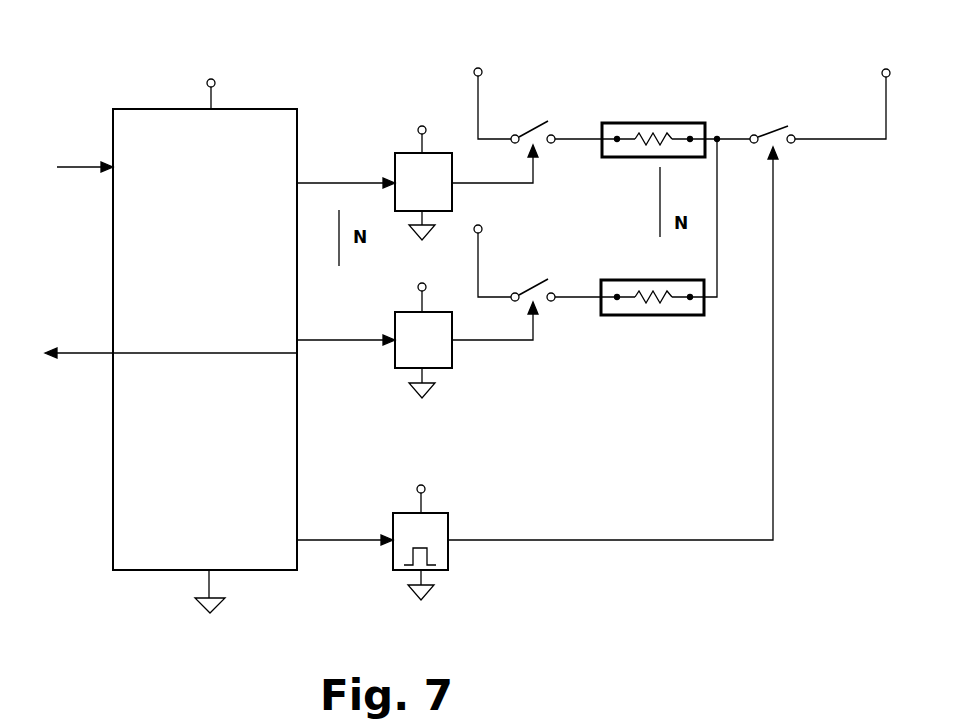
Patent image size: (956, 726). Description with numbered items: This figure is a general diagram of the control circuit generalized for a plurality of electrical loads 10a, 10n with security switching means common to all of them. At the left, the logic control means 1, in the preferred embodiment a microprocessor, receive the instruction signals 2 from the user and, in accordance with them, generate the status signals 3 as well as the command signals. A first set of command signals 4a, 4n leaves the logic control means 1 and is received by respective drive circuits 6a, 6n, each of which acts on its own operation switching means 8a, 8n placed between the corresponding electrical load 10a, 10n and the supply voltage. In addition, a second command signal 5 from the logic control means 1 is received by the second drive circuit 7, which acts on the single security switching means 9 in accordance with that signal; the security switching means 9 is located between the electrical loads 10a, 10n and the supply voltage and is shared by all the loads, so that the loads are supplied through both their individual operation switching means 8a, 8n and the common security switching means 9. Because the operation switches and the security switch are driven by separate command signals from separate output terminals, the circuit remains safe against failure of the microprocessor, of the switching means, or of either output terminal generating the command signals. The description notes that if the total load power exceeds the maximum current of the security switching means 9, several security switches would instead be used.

The logic control means 1 is at (205, 337).
The instruction signals 2 is at (72, 152).
The status signals 3 is at (72, 325).
The command signal 4a is at (327, 167).
The command signal 4n is at (312, 325).
The second command signal 5 is at (337, 527).
The drive circuit 6a is at (466, 170).
The drive circuit 6n is at (466, 327).
The second drive circuit 7 is at (585, 373).
The operation switching means 8a is at (537, 92).
The operation switching means 8n is at (537, 250).
The security switching means 9 is at (805, 92).
The electrical load 10a is at (661, 129).
The electrical load 10n is at (659, 227).